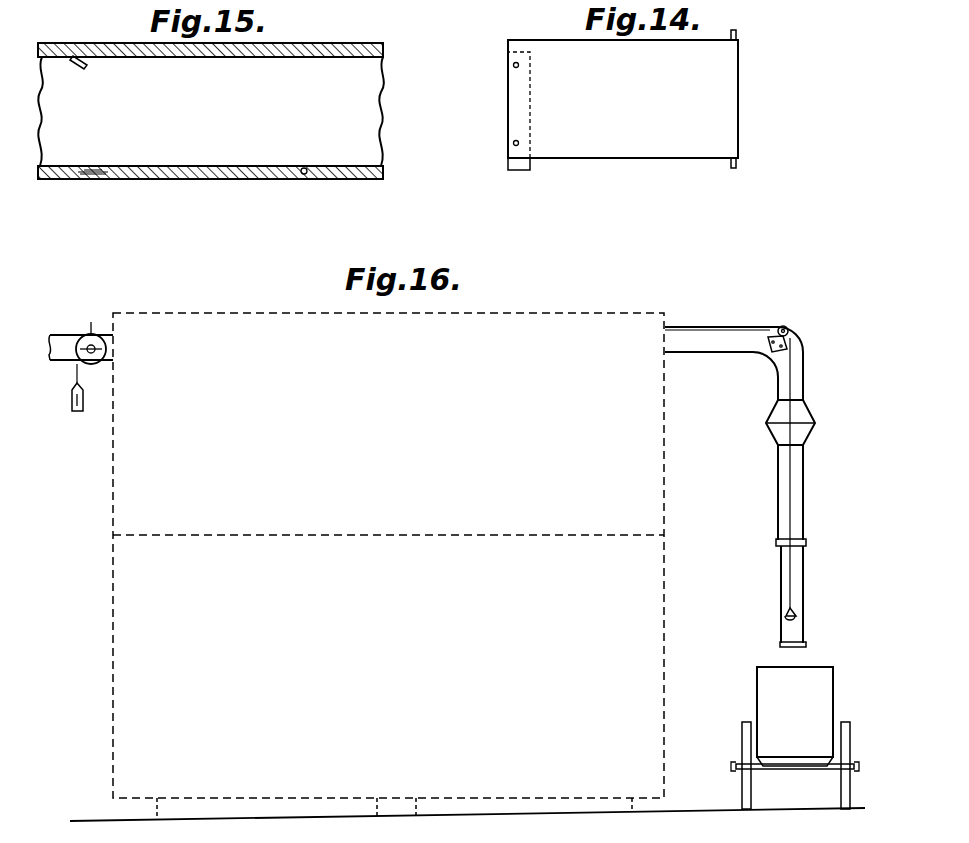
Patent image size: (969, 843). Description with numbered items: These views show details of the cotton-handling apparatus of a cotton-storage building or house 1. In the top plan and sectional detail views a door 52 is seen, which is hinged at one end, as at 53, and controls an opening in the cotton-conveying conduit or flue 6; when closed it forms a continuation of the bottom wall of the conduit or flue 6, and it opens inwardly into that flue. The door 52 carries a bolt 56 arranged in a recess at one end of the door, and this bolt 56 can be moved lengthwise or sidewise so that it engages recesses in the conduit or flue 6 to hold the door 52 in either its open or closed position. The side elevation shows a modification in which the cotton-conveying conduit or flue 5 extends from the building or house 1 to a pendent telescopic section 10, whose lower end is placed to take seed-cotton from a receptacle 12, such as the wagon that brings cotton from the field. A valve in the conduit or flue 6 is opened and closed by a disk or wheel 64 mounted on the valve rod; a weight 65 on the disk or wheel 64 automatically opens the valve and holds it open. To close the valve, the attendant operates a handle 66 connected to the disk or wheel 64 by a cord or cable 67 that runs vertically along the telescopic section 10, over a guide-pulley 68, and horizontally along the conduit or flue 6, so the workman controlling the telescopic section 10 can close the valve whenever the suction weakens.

In FIG. 16, the cotton-storage building 1 is at (388, 566).
In FIG. 16, the cotton-conveying conduit 5 is at (62, 336).
In FIG. 15, the cotton-conveying conduit 6 is at (211, 111).
In FIG. 16, the telescopic section 10 is at (805, 516).
In FIG. 16, the receptacle 12 is at (795, 738).
In FIG. 15, the door 52 is at (203, 160).
In FIG. 14, the door 52 is at (623, 99).
In FIG. 15, the hinge 53 is at (305, 168).
In FIG. 15, the bolt 56 is at (90, 171).
In FIG. 14, the bolt 56 is at (530, 170).
In FIG. 16, the disk or wheel 64 is at (91, 332).
In FIG. 16, the weight 65 is at (70, 400).
In FIG. 16, the handle 66 is at (787, 617).
In FIG. 16, the cord 67 is at (790, 463).
In FIG. 16, the guide-pulley 68 is at (788, 328).